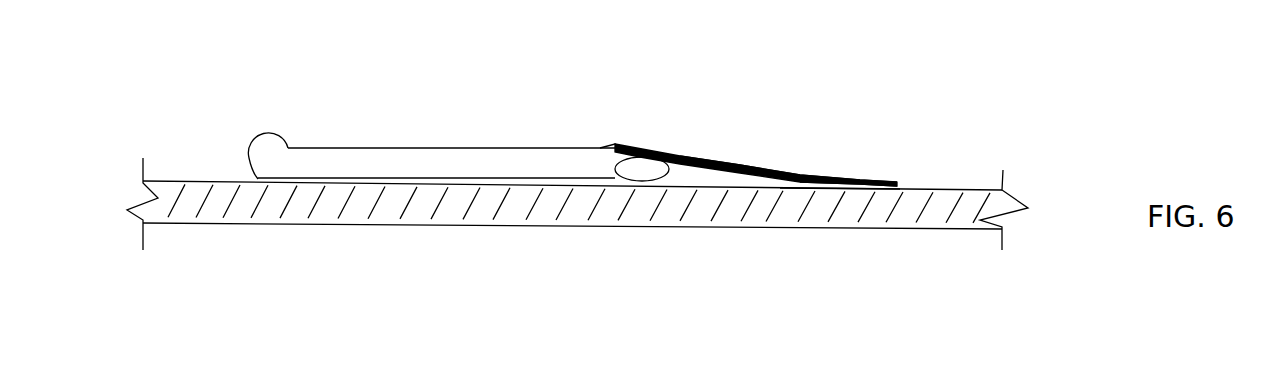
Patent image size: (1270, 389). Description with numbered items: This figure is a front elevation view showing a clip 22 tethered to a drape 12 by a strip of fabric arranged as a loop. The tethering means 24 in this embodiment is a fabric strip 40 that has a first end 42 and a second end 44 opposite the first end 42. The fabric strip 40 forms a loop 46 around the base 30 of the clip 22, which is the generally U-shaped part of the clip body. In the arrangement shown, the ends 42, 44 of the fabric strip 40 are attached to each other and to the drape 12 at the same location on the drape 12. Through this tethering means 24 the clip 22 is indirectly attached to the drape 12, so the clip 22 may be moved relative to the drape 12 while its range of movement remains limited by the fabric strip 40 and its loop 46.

The drape 12 is at (445, 226).
The clip 22 is at (372, 148).
The tethering means 24 is at (730, 158).
The base 30 is at (668, 182).
The fabric strip 40 is at (708, 160).
The first end 42 is at (855, 178).
The second end 44 is at (828, 230).
The loop 46 is at (620, 148).